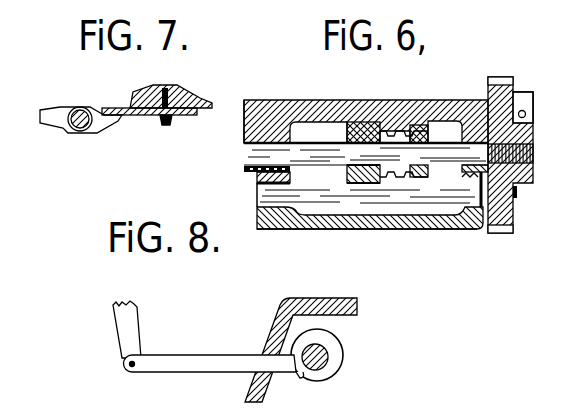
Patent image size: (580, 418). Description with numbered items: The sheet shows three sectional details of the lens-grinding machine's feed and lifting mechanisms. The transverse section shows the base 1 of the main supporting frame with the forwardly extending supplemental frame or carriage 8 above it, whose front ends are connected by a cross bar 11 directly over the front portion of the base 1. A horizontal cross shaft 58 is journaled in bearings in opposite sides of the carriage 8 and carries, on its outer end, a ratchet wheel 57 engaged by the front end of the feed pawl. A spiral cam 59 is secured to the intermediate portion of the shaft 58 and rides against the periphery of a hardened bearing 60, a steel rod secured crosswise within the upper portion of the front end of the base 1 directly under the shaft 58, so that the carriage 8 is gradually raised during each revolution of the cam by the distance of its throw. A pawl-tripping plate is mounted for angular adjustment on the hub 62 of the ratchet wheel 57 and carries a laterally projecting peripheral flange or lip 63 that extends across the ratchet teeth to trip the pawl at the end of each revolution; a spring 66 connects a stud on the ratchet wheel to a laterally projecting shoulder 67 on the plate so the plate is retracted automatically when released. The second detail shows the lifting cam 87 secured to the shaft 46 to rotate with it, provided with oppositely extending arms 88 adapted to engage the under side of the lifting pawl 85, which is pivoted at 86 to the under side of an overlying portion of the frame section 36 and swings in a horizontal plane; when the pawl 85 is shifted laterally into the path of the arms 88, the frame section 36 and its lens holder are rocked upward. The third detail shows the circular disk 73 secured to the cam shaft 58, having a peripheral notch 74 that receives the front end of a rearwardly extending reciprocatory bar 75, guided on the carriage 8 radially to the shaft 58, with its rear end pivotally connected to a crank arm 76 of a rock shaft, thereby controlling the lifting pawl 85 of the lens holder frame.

In FIG. 6, the base 1 is at (352, 229).
In FIG. 8, the base 1 is at (298, 297).
In FIG. 6, the supplemental frame 8 is at (248, 121).
In FIG. 6, the cross bar 11 is at (398, 105).
In FIG. 7, the frame section 36 is at (178, 85).
In FIG. 7, the shaft 46 is at (80, 110).
In FIG. 6, the ratchet wheel 57 is at (500, 226).
In FIG. 6, the cross shaft 58 is at (310, 150).
In FIG. 8, the cross shaft 58 is at (343, 361).
In FIG. 6, the spiral cam 59 is at (362, 126).
In FIG. 6, the hardened bearing 60 is at (411, 194).
In FIG. 6, the hub 62 is at (535, 177).
In FIG. 6, the flange 63 is at (501, 78).
In FIG. 6, the spring 66 is at (527, 114).
In FIG. 6, the shoulder 67 is at (530, 99).
In FIG. 6, the circular disk 73 is at (426, 128).
In FIG. 8, the circular disk 73 is at (335, 338).
In FIG. 8, the peripheral notch 74 is at (302, 376).
In FIG. 8, the reciprocatory bar 75 is at (183, 372).
In FIG. 8, the crank arm 76 is at (139, 322).
In FIG. 7, the lifting pawl 85 is at (145, 116).
In FIG. 7, the pivot 86 is at (170, 121).
In FIG. 7, the lifting cam 87 is at (82, 132).
In FIG. 7, the arms 88 is at (44, 125).